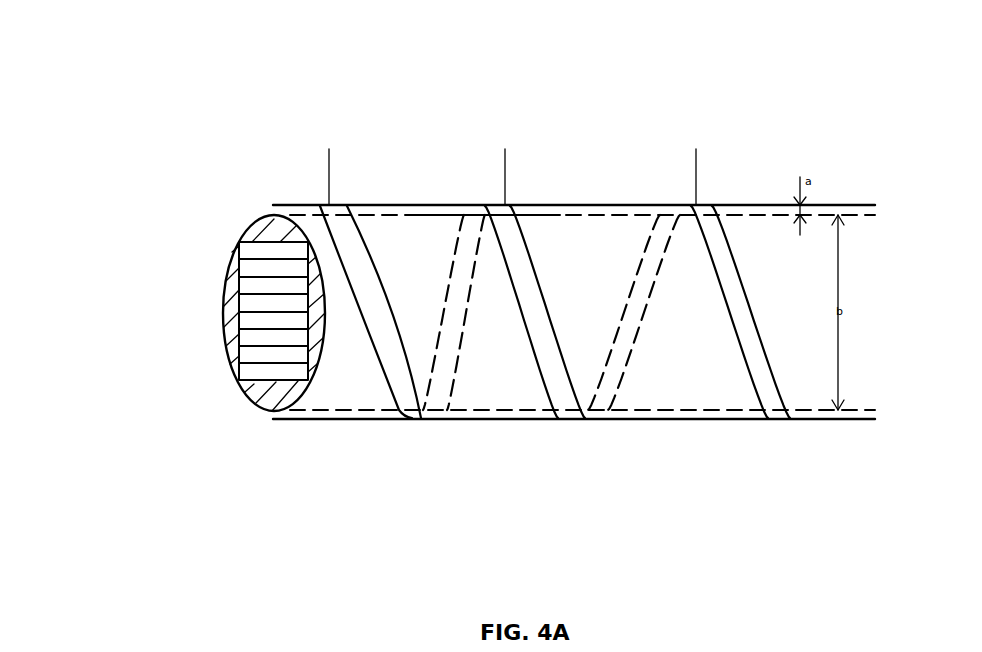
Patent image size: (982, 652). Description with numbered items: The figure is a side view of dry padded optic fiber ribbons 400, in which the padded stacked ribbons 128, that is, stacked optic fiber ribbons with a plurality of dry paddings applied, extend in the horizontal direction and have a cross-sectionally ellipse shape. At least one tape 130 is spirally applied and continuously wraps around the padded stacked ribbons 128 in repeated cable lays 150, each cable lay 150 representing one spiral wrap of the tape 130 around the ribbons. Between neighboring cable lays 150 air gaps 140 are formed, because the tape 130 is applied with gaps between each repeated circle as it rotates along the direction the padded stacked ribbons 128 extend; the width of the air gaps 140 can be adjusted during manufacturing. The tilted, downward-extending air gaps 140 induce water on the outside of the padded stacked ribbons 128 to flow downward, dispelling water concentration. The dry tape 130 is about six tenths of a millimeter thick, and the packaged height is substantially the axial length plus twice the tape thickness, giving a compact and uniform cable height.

The stent graft assembly 400 is at (72, 36).
The padded stacked ribbons 128 is at (220, 312).
The tape 130 is at (497, 333).
The air gaps 140 is at (740, 326).
The cable lays 150 is at (674, 192).